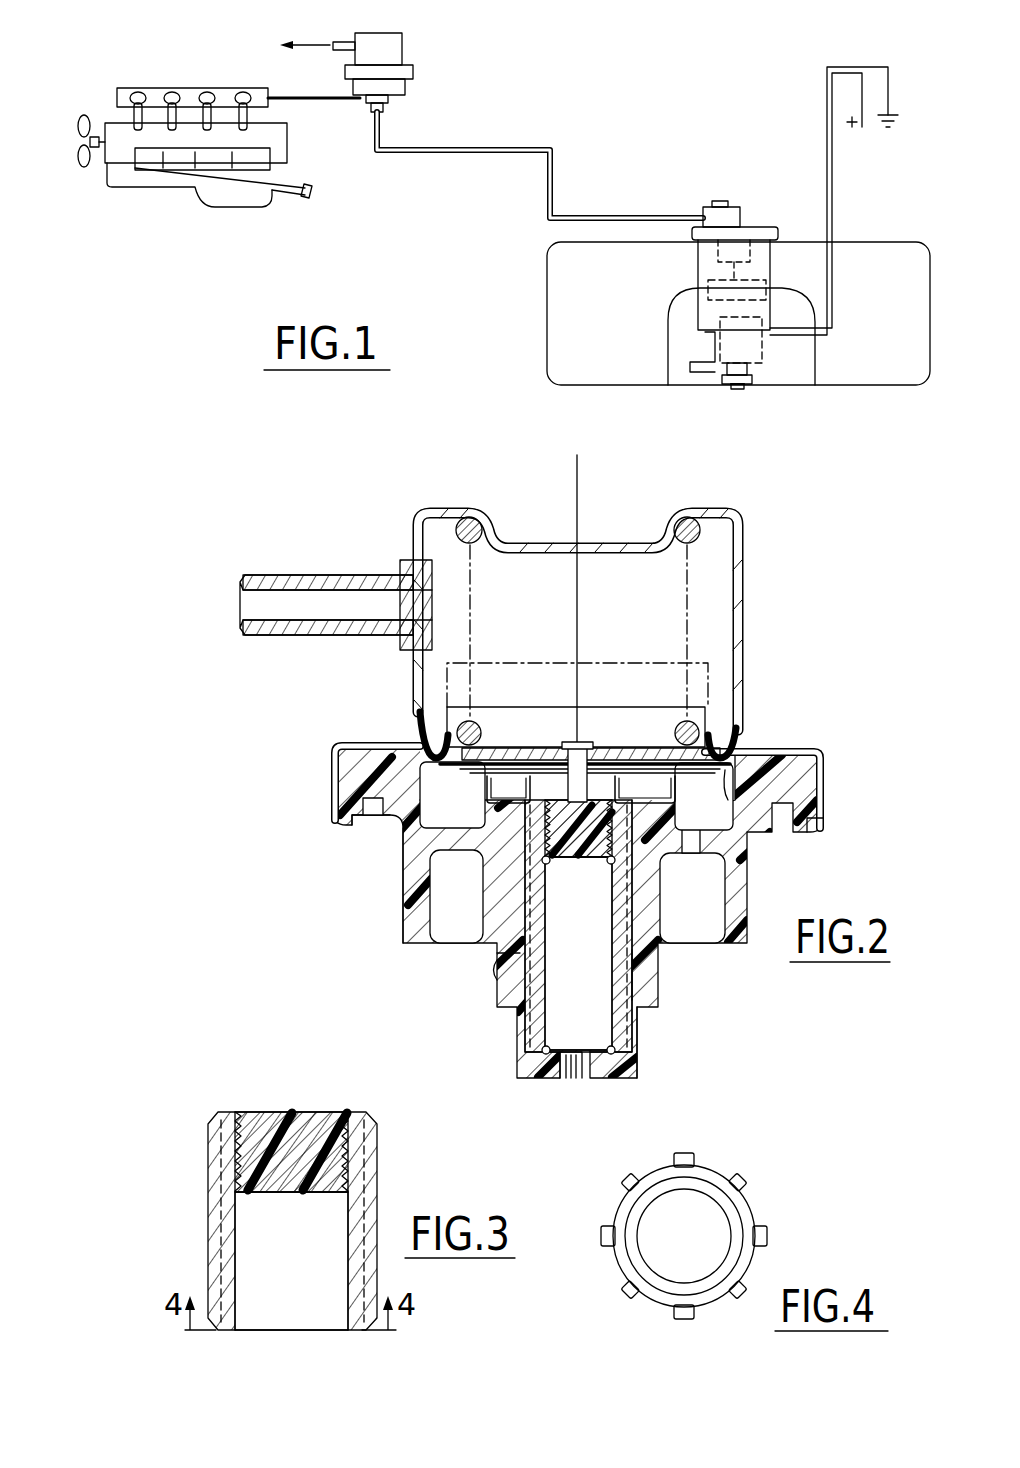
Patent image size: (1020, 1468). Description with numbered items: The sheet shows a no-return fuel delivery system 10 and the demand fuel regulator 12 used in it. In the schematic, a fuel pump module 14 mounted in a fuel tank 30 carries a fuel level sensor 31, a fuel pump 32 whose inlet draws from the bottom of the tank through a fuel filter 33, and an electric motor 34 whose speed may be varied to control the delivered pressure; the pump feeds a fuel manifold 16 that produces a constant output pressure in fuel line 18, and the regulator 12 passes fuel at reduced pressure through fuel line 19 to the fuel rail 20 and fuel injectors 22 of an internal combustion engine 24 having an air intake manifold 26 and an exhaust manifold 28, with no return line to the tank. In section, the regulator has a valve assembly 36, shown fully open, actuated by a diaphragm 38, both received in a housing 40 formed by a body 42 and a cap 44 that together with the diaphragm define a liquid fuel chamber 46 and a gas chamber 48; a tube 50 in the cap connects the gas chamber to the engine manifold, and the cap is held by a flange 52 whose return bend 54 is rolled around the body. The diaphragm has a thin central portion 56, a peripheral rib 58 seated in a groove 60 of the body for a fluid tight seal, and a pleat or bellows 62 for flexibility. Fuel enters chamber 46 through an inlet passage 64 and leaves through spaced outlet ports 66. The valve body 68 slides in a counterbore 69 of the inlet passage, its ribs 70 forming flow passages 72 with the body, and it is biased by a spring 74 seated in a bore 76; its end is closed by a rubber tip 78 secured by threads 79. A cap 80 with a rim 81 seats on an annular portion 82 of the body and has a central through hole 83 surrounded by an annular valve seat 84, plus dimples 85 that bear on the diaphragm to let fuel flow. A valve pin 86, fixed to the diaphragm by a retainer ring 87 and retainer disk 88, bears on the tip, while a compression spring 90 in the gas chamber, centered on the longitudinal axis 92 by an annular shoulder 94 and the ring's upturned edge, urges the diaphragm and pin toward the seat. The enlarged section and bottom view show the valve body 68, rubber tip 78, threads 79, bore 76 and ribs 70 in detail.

In FIG. 1, the no-return fuel delivery system 10 is at (760, 74).
In FIG. 1, the demand fuel regulator 12 is at (402, 22).
In FIG. 2, the demand fuel regulator 12 is at (559, 597).
In FIG. 1, the fuel pump module 14 is at (642, 313).
In FIG. 1, the fuel manifold 16 is at (752, 230).
In FIG. 1, the fuel line 18 is at (552, 184).
In FIG. 1, the fuel line 19 is at (326, 102).
In FIG. 1, the fuel rail 20 is at (130, 90).
In FIG. 1, the fuel injectors 22 is at (245, 93).
In FIG. 1, the internal combustion engine 24 is at (148, 210).
In FIG. 1, the air intake manifold 26 is at (104, 123).
In FIG. 1, the exhaust manifold 28 is at (290, 190).
In FIG. 1, the fuel tank 30 is at (872, 385).
In FIG. 1, the fuel level sensor 31 is at (684, 342).
In FIG. 1, the fuel pump 32 is at (760, 337).
In FIG. 1, the fuel filter 33 is at (733, 384).
In FIG. 1, the electric motor 34 is at (708, 290).
In FIG. 2, the valve assembly 36 is at (502, 908).
In FIG. 2, the diaphragm 38 is at (740, 746).
In FIG. 2, the housing 40 is at (538, 909).
In FIG. 2, the body 42 is at (417, 872).
In FIG. 2, the cap 44 is at (410, 542).
In FIG. 2, the liquid fuel chamber 46 is at (427, 797).
In FIG. 2, the gas chamber 48 is at (717, 628).
In FIG. 2, the passage or tube 50 is at (315, 635).
In FIG. 2, the flange 52 is at (810, 748).
In FIG. 2, the return bend 54 is at (807, 833).
In FIG. 2, the central portion 56 is at (515, 745).
In FIG. 2, the peripheral rib 58 is at (400, 745).
In FIG. 2, the groove 60 is at (348, 762).
In FIG. 2, the pleat or bellows 62 is at (722, 726).
In FIG. 2, the inlet passage 64 is at (575, 1078).
In FIG. 2, the outlet ports 66 is at (465, 855).
In FIG. 2, the valve body 68 is at (578, 927).
In FIG. 3, the valve body 68 is at (208, 1172).
In FIG. 2, the counterbore 69 is at (530, 978).
In FIG. 3, the ribs 70 is at (377, 1160).
In FIG. 4, the ribs 70 is at (787, 1257).
In FIG. 2, the flow passages 72 is at (633, 950).
In FIG. 2, the spring 74 is at (632, 1037).
In FIG. 2, the bore 76 is at (547, 940).
In FIG. 3, the bore 76 is at (238, 1290).
In FIG. 2, the rubber tip 78 is at (590, 857).
In FIG. 3, the rubber tip 78 is at (325, 1112).
In FIG. 3, the threads 79 is at (236, 1168).
In FIG. 2, the cap 80 is at (480, 797).
In FIG. 2, the rim 81 is at (482, 825).
In FIG. 2, the annular portion 82 is at (665, 828).
In FIG. 2, the central through hole 83 is at (598, 745).
In FIG. 2, the annular valve seat 84 is at (552, 758).
In FIG. 2, the dimples 85 is at (673, 767).
In FIG. 2, the valve pin 86 is at (577, 742).
In FIG. 2, the retainer ring 87 is at (655, 745).
In FIG. 2, the retainer disk 88 is at (628, 760).
In FIG. 2, the compression spring 90 is at (476, 518).
In FIG. 2, the longitudinal axis 92 is at (580, 482).
In FIG. 2, the annular shoulder 94 is at (677, 545).